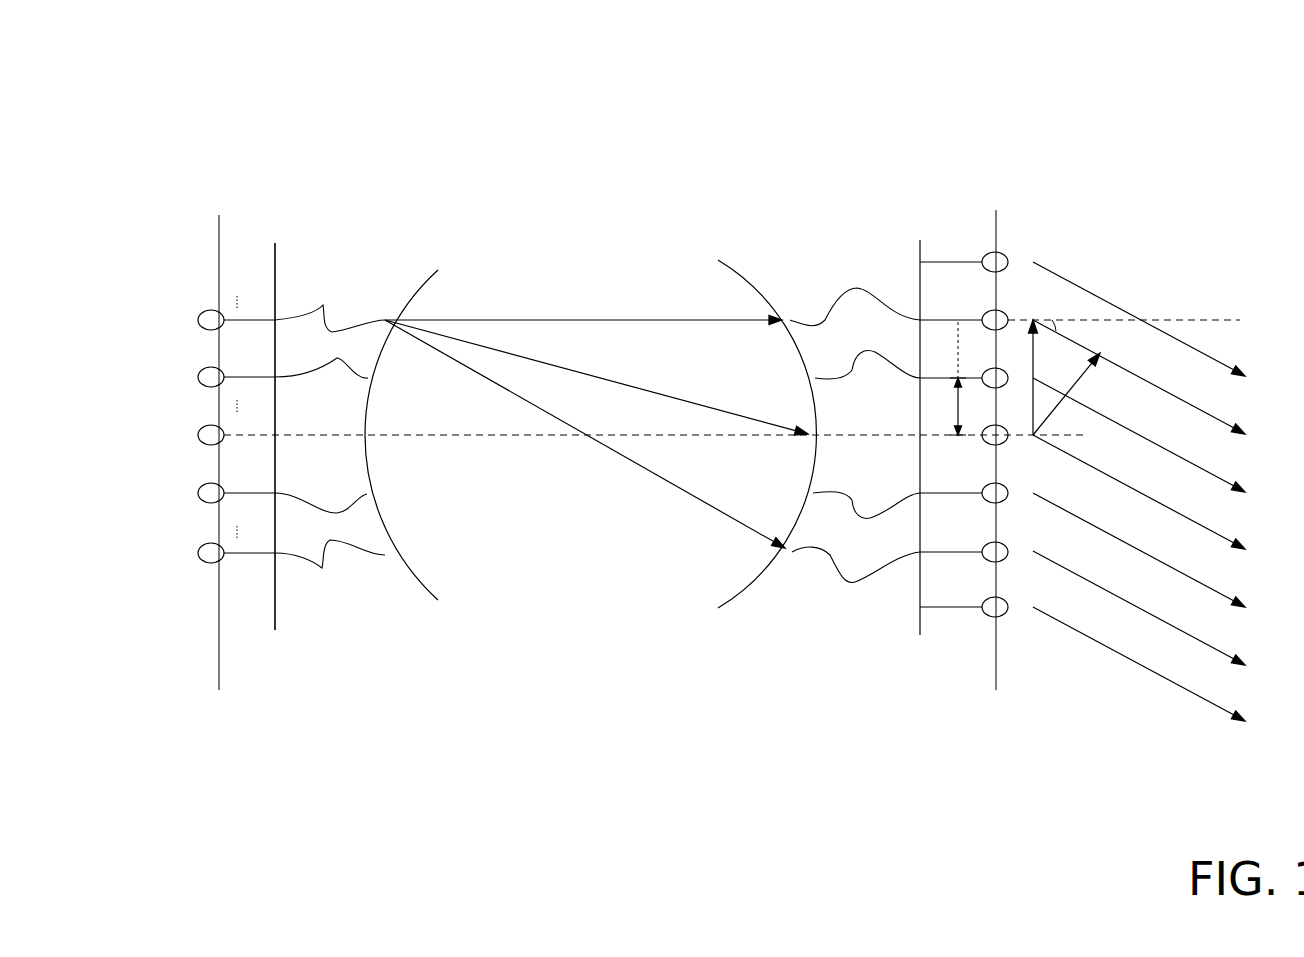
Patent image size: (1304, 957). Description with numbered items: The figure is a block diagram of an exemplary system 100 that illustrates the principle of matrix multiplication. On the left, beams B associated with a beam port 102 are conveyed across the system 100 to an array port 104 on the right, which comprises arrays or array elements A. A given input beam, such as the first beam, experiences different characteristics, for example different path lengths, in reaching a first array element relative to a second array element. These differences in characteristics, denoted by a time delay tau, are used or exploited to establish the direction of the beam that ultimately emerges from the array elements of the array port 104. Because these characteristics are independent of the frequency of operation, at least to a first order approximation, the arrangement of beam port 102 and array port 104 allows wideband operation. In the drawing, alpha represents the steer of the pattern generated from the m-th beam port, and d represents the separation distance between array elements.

The system 100 is at (212, 88).
The beam port 102 is at (291, 412).
The array port 104 is at (1017, 428).